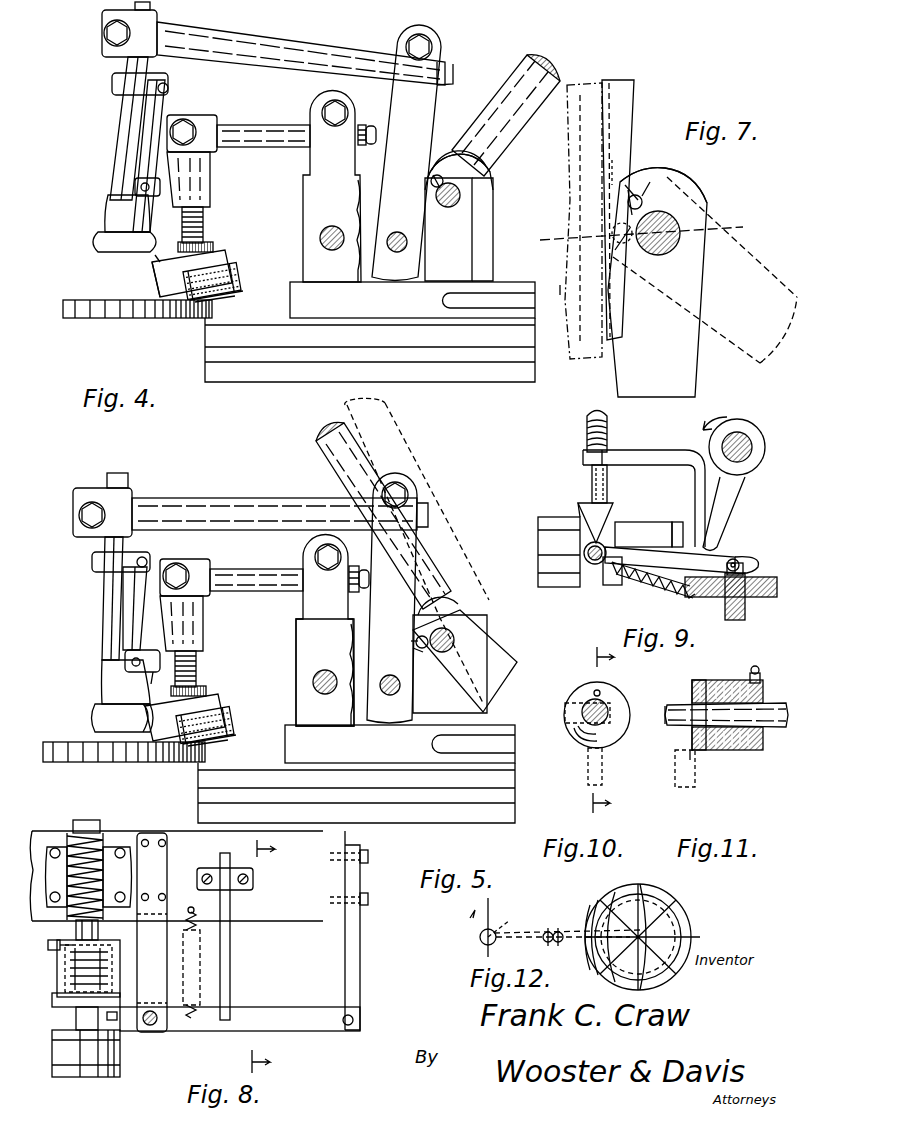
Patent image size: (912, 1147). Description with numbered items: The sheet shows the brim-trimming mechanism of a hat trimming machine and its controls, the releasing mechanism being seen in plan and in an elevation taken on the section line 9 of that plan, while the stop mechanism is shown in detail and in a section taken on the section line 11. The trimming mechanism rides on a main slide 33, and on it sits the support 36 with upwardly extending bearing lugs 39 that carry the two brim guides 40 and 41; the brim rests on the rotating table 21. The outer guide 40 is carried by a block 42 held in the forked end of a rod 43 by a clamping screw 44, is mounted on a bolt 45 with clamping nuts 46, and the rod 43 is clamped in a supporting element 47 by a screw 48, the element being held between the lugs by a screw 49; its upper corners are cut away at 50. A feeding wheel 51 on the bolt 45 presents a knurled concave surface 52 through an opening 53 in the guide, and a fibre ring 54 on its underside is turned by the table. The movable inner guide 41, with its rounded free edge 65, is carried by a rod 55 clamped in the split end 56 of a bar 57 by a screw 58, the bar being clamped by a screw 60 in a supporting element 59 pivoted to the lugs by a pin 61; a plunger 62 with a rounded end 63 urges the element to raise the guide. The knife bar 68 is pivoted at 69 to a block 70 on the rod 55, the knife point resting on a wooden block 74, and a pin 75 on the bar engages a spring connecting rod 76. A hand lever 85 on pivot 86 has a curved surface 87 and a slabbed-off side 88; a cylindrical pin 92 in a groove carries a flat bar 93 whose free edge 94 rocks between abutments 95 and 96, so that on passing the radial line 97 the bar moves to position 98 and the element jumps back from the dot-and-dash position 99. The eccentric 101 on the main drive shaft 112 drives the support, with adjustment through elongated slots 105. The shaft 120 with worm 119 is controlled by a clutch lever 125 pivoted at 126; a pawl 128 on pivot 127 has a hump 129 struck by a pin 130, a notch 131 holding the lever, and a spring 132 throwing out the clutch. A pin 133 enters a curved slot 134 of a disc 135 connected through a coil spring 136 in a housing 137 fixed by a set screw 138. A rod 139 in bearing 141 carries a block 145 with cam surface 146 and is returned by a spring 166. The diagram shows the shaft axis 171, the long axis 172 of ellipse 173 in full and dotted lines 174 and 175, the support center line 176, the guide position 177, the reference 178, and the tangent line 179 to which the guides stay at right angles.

In FIG. 8, the section line 9— 9 is at (269, 956).
In FIG. 10, the section line 11— 11 is at (615, 730).
In FIG. 4, the table 21 is at (75, 299).
In FIG. 5, the table 21 is at (124, 740).
In FIG. 4, the main slide 33 is at (280, 372).
In FIG. 5, the main slide 33 is at (348, 793).
In FIG. 4, the support 36 is at (502, 284).
In FIG. 5, the support 36 is at (403, 736).
In FIG. 4, the bearing lugs 39 is at (493, 213).
In FIG. 5, the bearing lugs 39 is at (316, 672).
In FIG. 4, the outer guide 40 is at (158, 287).
In FIG. 4, the inner guide 41 is at (118, 252).
In FIG. 5, the inner guide 41 is at (109, 719).
In FIG. 4, the block 42 is at (211, 196).
In FIG. 5, the block 42 is at (199, 623).
In FIG. 4, the rod 43 is at (270, 127).
In FIG. 5, the rod 43 is at (256, 571).
In FIG. 4, the clamping screw 44 is at (196, 128).
In FIG. 5, the clamping screw 44 is at (197, 569).
In FIG. 4, the bolt 45 is at (205, 228).
In FIG. 5, the bolt 45 is at (207, 669).
In FIG. 4, the clamping nuts 46 is at (215, 248).
In FIG. 5, the clamping nuts 46 is at (206, 685).
In FIG. 4, the supporting element 47 is at (320, 153).
In FIG. 5, the supporting element 47 is at (316, 631).
In FIG. 4, the clamping screw 48 is at (340, 108).
In FIG. 5, the clamping screw 48 is at (318, 551).
In FIG. 4, the screw 49 is at (318, 242).
In FIG. 5, the screw 49 is at (326, 670).
In FIG. 4, the cut-away corners 50 is at (168, 262).
In FIG. 5, the cut-away corners 50 is at (185, 717).
In FIG. 4, the feeding wheel 51 is at (241, 290).
In FIG. 5, the feeding wheel 51 is at (226, 728).
In FIG. 4, the concave annular surface 52 is at (238, 270).
In FIG. 5, the concave annular surface 52 is at (222, 719).
In FIG. 5, the opening 53 is at (119, 750).
In FIG. 4, the fibre ring 54 is at (225, 298).
In FIG. 5, the fibre ring 54 is at (225, 740).
In FIG. 4, the rod 55 is at (112, 156).
In FIG. 5, the rod 55 is at (102, 598).
In FIG. 4, the split end 56 is at (108, 58).
In FIG. 5, the split end 56 is at (127, 505).
In FIG. 4, the bar 57 is at (312, 50).
In FIG. 5, the bar 57 is at (280, 506).
In FIG. 4, the clamping screw 58 is at (108, 35).
In FIG. 5, the clamping screw 58 is at (79, 527).
In FIG. 4, the supporting element 59 is at (426, 116).
In FIG. 5, the supporting element 59 is at (418, 598).
In FIG. 7, the supporting element 59 is at (620, 110).
In FIG. 4, the clamping screw 60 is at (434, 47).
In FIG. 5, the clamping screw 60 is at (419, 491).
In FIG. 4, the pin 61 is at (398, 232).
In FIG. 5, the pin 61 is at (392, 676).
In FIG. 4, the plunger 62 is at (366, 128).
In FIG. 4, the rounded outer end 63 is at (378, 134).
In FIG. 5, the rounded outer end 63 is at (374, 579).
In FIG. 4, the free edge 65 is at (160, 250).
In FIG. 4, the bar 68 is at (162, 110).
In FIG. 5, the bar 68 is at (114, 608).
In FIG. 4, the pivot 69 is at (168, 88).
In FIG. 5, the pivot 69 is at (156, 552).
In FIG. 4, the block 70 is at (120, 91).
In FIG. 5, the block 70 is at (105, 568).
In FIG. 5, the wooden block 74 is at (163, 686).
In FIG. 4, the pin 75 is at (110, 200).
In FIG. 5, the pin 75 is at (111, 682).
In FIG. 4, the spring connecting rod 76 is at (135, 187).
In FIG. 5, the spring connecting rod 76 is at (144, 670).
In FIG. 4, the hand lever 85 is at (494, 143).
In FIG. 5, the hand lever 85 is at (397, 550).
In FIG. 4, the pivot 86 is at (450, 208).
In FIG. 5, the pivot 86 is at (452, 649).
In FIG. 7, the pivot 86 is at (670, 252).
In FIG. 4, the curved surface 87 is at (450, 162).
In FIG. 5, the curved surface 87 is at (424, 614).
In FIG. 7, the curved surface 87 is at (690, 176).
In FIG. 4, the slabbed-off side 88 is at (425, 200).
In FIG. 5, the slabbed-off side 88 is at (465, 661).
In FIG. 7, the slabbed-off side 88 is at (616, 290).
In FIG. 4, the cylindrical pin 92 is at (444, 181).
In FIG. 5, the cylindrical pin 92 is at (425, 662).
In FIG. 7, the cylindrical pin 92 is at (643, 203).
In FIG. 4, the flat bar 93 is at (432, 178).
In FIG. 5, the flat bar 93 is at (403, 656).
In FIG. 7, the flat bar 93 is at (639, 181).
In FIG. 7, the free edge 94 is at (637, 176).
In FIG. 5, the upper abutment 95 is at (400, 640).
In FIG. 7, the upper abutment 95 is at (663, 172).
In FIG. 7, the lower abutment 96 is at (625, 228).
In FIG. 7, the radial line 97 is at (560, 243).
In FIG. 7, the position of free edge 98 is at (626, 250).
In FIG. 7, the dot and dash position 99 is at (612, 165).
In FIG. 12, the eccentric 101 is at (480, 938).
In FIG. 4, the elongated slots 105 is at (528, 300).
In FIG. 7, the elongated slots 105 is at (560, 290).
In FIG. 9, the main drive shaft 112 is at (748, 440).
In FIG. 8, the worm 119 is at (108, 836).
In FIG. 9, the shaft 120 is at (677, 530).
In FIG. 10, the shaft 120 is at (582, 718).
In FIG. 11, the shaft 120 is at (668, 725).
In FIG. 8, the shaft 120 is at (76, 932).
In FIG. 9, the clutch lever 125 is at (586, 551).
In FIG. 10, the clutch lever 125 is at (603, 765).
In FIG. 11, the clutch lever 125 is at (676, 778).
In FIG. 8, the clutch lever 125 is at (295, 1008).
In FIG. 8, the pivot 126 is at (355, 1020).
In FIG. 9, the pivot 127 is at (752, 566).
In FIG. 8, the pivot 127 is at (235, 890).
In FIG. 9, the pawl 128 is at (670, 560).
In FIG. 8, the pawl 128 is at (232, 974).
In FIG. 9, the hump 129 is at (742, 550).
In FIG. 9, the pin 130 is at (725, 510).
In FIG. 9, the notch 131 is at (622, 535).
In FIG. 9, the spring 132 is at (648, 590).
In FIG. 8, the spring 132 is at (200, 957).
In FIG. 8, the pin 133 is at (118, 1014).
In FIG. 10, the curved slot 134 is at (583, 742).
In FIG. 11, the curved slot 134 is at (688, 752).
In FIG. 9, the disc 135 is at (608, 590).
In FIG. 10, the disc 135 is at (622, 697).
In FIG. 11, the disc 135 is at (700, 682).
In FIG. 8, the disc 135 is at (55, 1007).
In FIG. 11, the coil spring 136 is at (728, 683).
In FIG. 8, the coil spring 136 is at (60, 990).
In FIG. 9, the housing 137 is at (622, 600).
In FIG. 11, the housing 137 is at (740, 751).
In FIG. 8, the housing 137 is at (60, 975).
In FIG. 11, the set screw 138 is at (762, 676).
In FIG. 8, the set screw 138 is at (50, 950).
In FIG. 9, the rod 139 is at (608, 490).
In FIG. 8, the rod 139 is at (150, 1027).
In FIG. 9, the bearing 141 is at (640, 455).
In FIG. 8, the bearing 141 is at (152, 932).
In FIG. 9, the block 145 is at (612, 510).
In FIG. 9, the cam surface 146 is at (578, 512).
In FIG. 9, the spring 166 is at (610, 425).
In FIG. 12, the axis of the shaft 171 is at (485, 945).
In FIG. 12, the long axis 172 is at (690, 925).
In FIG. 12, the ellipse 173 is at (688, 915).
In FIG. 12, the full line 174 is at (616, 892).
In FIG. 12, the dotted line 175 is at (642, 888).
In FIG. 12, the center line of support 176 is at (560, 930).
In FIG. 12, the guide position 177 is at (588, 960).
In FIG. 12, the axis 178 is at (692, 938).
In FIG. 12, the tangent line 179 is at (596, 975).